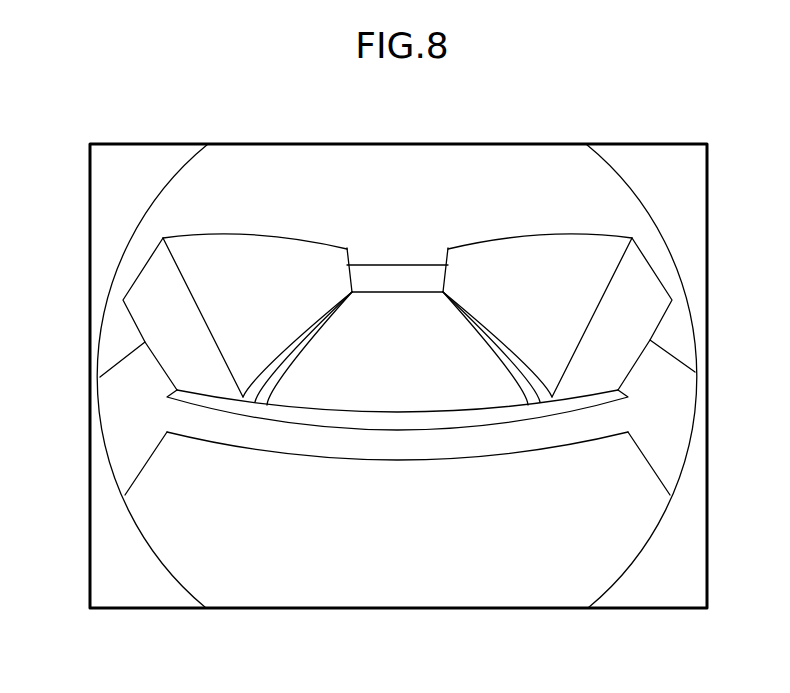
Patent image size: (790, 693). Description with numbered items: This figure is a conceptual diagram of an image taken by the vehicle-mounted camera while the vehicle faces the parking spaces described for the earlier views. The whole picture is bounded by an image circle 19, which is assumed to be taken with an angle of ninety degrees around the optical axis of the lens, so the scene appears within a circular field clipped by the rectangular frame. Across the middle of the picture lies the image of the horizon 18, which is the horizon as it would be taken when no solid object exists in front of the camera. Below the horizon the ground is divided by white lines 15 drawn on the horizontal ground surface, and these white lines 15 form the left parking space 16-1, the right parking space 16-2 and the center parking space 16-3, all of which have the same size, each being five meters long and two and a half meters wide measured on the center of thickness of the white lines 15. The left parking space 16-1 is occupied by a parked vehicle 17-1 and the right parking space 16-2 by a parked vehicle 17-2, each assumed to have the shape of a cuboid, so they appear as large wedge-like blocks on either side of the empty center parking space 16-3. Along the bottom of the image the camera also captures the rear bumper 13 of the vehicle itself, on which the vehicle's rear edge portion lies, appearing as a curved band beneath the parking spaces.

The rear bumper 13 is at (371, 460).
The white lines 15 is at (446, 418).
The left parking space 16-1 is at (253, 393).
The right parking space 16-2 is at (541, 390).
The center parking space 16-3 is at (305, 392).
The vehicle parked in the left parking space 17-1 is at (146, 286).
The vehicle parked in the right parking space 17-2 is at (649, 286).
The image of the horizon 18 is at (408, 264).
The image circle 19 is at (182, 168).